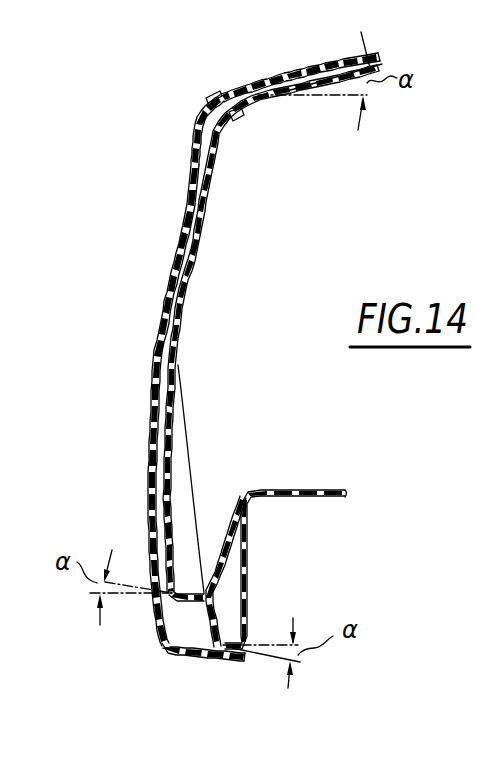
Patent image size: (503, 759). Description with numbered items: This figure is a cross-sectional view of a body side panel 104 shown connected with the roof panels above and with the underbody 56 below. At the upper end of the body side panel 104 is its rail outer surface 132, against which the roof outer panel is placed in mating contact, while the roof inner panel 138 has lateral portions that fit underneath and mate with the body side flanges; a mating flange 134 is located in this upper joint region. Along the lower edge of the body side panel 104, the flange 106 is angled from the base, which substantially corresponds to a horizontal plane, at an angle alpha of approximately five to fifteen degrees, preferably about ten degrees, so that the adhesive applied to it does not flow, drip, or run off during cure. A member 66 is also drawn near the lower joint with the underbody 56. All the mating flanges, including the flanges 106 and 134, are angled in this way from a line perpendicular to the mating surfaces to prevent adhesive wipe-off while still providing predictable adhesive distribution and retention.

The underbody 56 is at (293, 488).
The diagonal strut 66 is at (213, 612).
The body side panel 104 is at (158, 336).
The flange 106 is at (225, 658).
The rail outer surface 132 is at (197, 138).
The flange 134 is at (228, 88).
The roof inner panel 138 is at (337, 60).